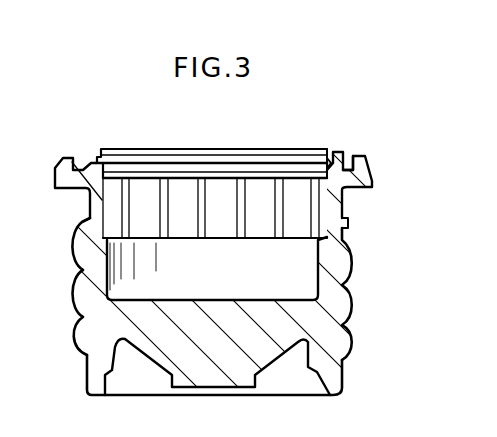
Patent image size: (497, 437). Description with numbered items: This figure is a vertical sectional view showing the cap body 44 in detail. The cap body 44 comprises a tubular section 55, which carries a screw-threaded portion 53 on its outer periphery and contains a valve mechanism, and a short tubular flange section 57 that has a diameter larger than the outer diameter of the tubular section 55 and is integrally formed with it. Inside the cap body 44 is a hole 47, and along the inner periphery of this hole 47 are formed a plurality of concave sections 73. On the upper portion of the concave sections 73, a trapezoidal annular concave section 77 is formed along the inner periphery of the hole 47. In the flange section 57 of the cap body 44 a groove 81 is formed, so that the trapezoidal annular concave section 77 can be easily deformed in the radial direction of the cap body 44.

The groove 81 is at (83, 172).
The concave sections 73 is at (182, 185).
The trapezoidal annular concave section 77 is at (332, 167).
The cap body 44 is at (351, 149).
The flange section 57 is at (373, 177).
The screw-threaded portion 53 is at (350, 266).
The tubular section 55 is at (343, 340).
The hole 47 is at (112, 263).